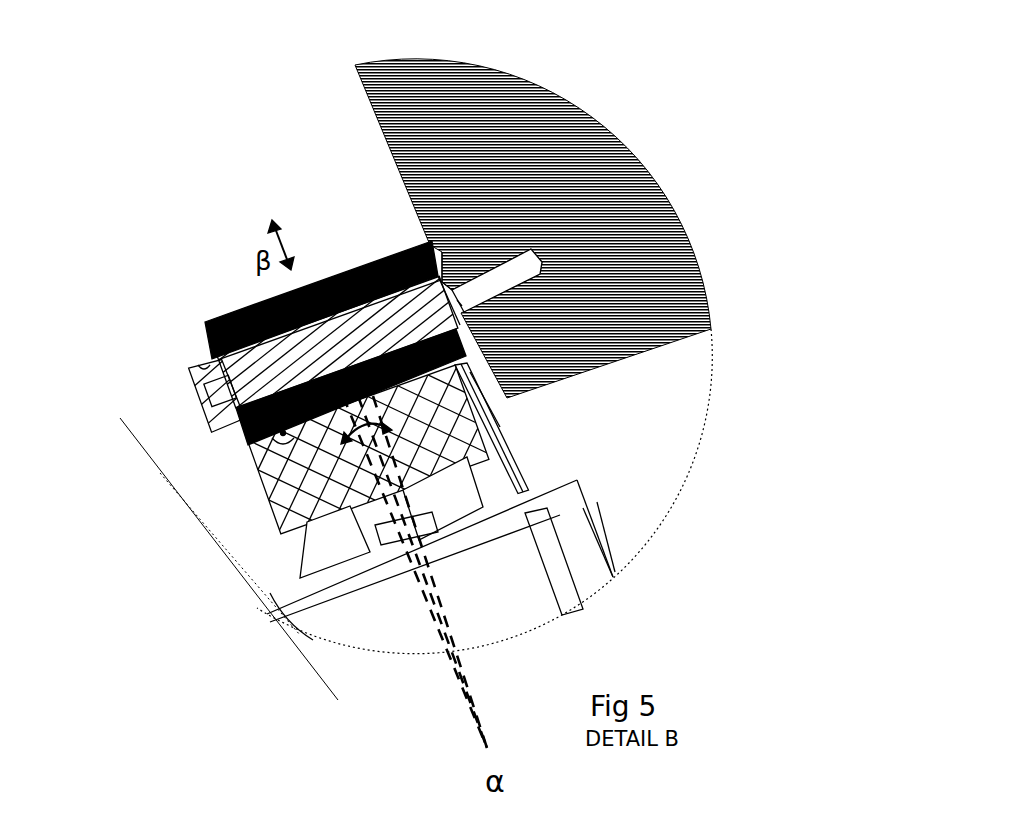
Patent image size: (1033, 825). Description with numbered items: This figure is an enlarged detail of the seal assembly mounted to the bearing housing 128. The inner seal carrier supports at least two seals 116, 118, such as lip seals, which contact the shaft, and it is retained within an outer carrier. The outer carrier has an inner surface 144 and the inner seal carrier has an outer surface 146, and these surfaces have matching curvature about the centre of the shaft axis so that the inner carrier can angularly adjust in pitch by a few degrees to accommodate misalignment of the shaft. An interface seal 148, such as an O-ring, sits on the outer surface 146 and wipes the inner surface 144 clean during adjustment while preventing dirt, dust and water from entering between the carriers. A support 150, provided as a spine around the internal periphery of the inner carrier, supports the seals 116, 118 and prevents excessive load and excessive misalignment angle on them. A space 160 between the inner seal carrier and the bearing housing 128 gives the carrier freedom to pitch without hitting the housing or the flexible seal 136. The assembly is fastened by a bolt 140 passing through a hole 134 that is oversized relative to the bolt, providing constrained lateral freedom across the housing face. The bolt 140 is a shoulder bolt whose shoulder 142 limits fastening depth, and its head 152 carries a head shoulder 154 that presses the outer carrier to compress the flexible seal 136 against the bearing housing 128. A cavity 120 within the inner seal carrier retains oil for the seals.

The bearing housing 128 is at (492, 118).
The bolt 140 is at (455, 297).
The flexible seal 136 is at (430, 250).
The shoulder 142 is at (457, 314).
The space 160 is at (505, 452).
The seal 118 is at (482, 465).
The cavity 120 is at (463, 505).
The head shoulder 154 is at (203, 367).
The head 152 is at (190, 370).
The hole 134 is at (233, 361).
The inner surface 144 is at (250, 441).
The outer surface 146 is at (258, 445).
The interface seal 148 is at (283, 435).
The support 150 is at (422, 527).
The seal 116 is at (310, 545).